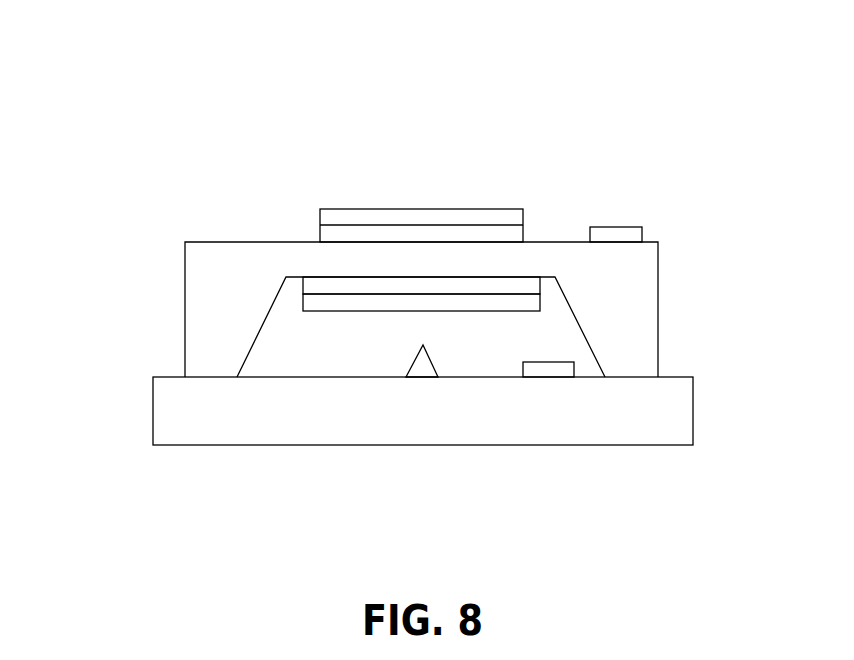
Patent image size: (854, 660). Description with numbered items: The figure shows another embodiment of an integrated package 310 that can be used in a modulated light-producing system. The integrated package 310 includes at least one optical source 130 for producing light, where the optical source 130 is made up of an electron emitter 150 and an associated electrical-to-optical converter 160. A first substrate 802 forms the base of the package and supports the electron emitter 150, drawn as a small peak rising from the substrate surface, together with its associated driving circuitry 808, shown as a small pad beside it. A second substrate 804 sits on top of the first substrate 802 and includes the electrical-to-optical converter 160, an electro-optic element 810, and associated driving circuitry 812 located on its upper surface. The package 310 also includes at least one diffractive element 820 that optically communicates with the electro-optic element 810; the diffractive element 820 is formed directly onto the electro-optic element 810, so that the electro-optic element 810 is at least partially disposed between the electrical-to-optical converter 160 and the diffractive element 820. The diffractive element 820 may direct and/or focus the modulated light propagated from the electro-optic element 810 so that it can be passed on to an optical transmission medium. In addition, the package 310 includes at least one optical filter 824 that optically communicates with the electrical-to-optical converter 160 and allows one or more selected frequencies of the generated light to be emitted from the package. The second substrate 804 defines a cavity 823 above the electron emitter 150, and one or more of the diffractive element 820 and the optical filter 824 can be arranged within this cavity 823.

The integrated package 310 is at (116, 120).
The first substrate 802 is at (151, 410).
The second substrate 804 is at (287, 241).
The diffractive element 820 is at (354, 209).
The electro-optic element 810 is at (422, 225).
The driving circuitry 812 is at (623, 227).
The cavity 823 is at (553, 335).
The optical filter 824 is at (457, 294).
The driving circuitry 808 is at (557, 361).
The electron emitter 150 is at (412, 360).
The electrical-to-optical converter 160 is at (440, 311).
The optical source 130 is at (473, 428).